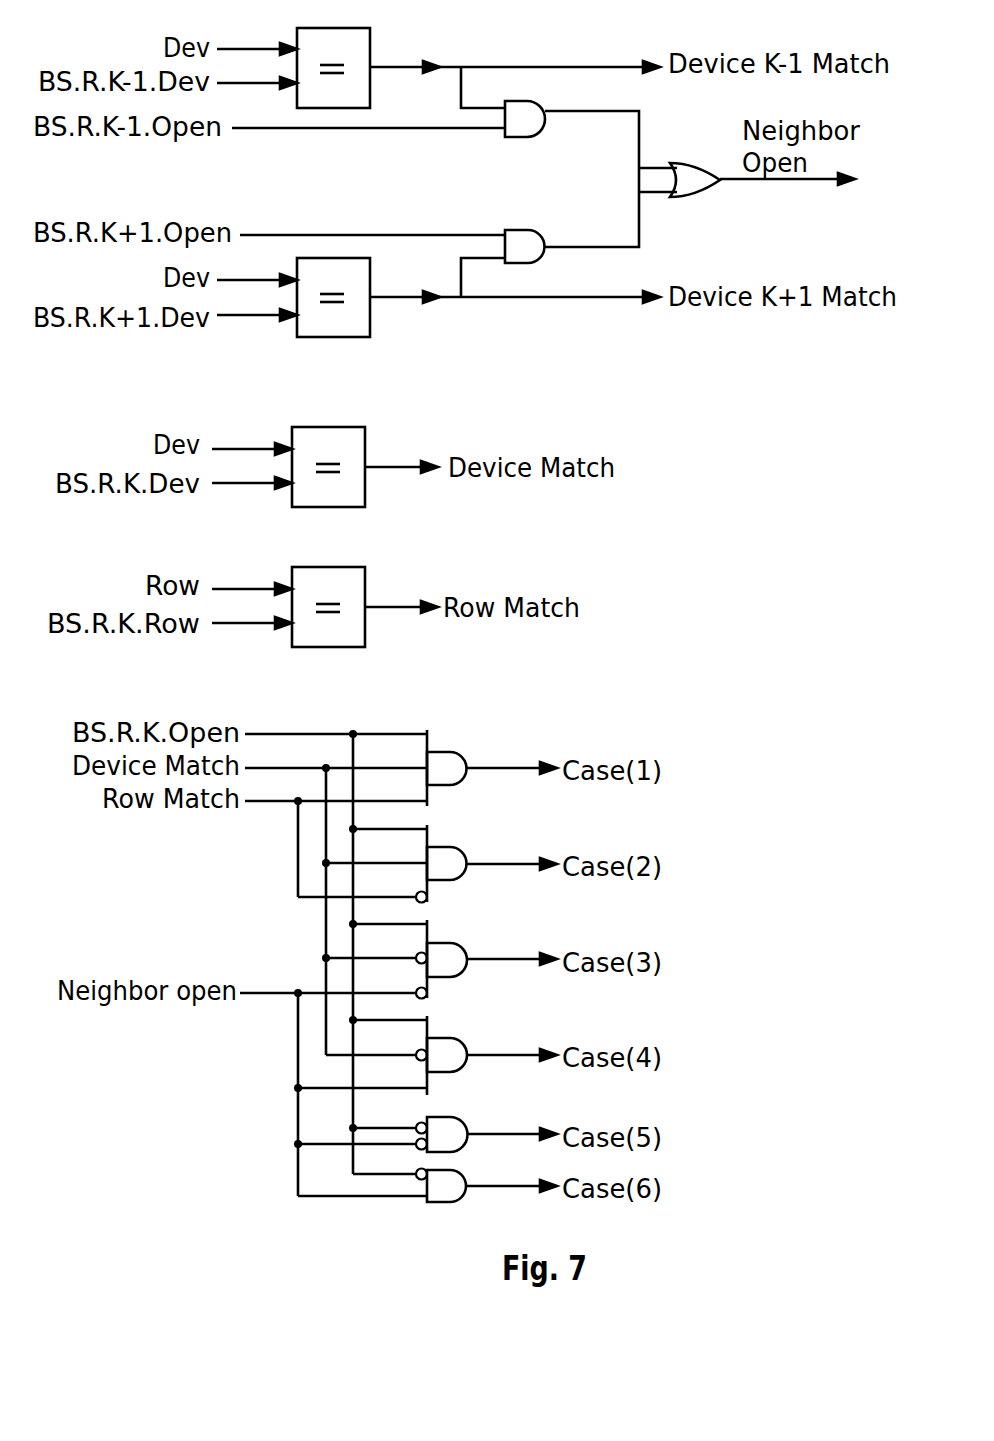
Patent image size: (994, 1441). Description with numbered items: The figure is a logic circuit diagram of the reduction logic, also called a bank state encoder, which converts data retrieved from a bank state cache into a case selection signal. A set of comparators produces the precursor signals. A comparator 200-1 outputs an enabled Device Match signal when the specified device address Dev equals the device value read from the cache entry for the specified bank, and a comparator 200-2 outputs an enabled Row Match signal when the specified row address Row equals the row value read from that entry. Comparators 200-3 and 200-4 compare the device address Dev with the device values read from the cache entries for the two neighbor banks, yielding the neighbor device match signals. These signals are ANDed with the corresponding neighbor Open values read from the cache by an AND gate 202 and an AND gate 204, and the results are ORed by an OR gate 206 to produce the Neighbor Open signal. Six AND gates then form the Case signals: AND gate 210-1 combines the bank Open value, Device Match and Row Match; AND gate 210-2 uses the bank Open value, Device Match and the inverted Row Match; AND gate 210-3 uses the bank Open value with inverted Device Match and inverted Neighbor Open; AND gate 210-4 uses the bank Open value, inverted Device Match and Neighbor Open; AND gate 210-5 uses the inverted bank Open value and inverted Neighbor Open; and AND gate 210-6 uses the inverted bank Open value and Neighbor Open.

The comparator 200-1 is at (365, 438).
The comparator 200-2 is at (365, 578).
The comparator 200-3 is at (370, 40).
The comparator 200-4 is at (370, 318).
The AND gate 202 is at (538, 135).
The AND gate 204 is at (533, 229).
The OR gate 206 is at (695, 198).
The AND gate 210-1 is at (478, 764).
The AND gate 210-2 is at (478, 860).
The AND gate 210-3 is at (478, 955).
The AND gate 210-4 is at (478, 1051).
The AND gate 210-5 is at (478, 1120).
The AND gate 210-6 is at (478, 1196).